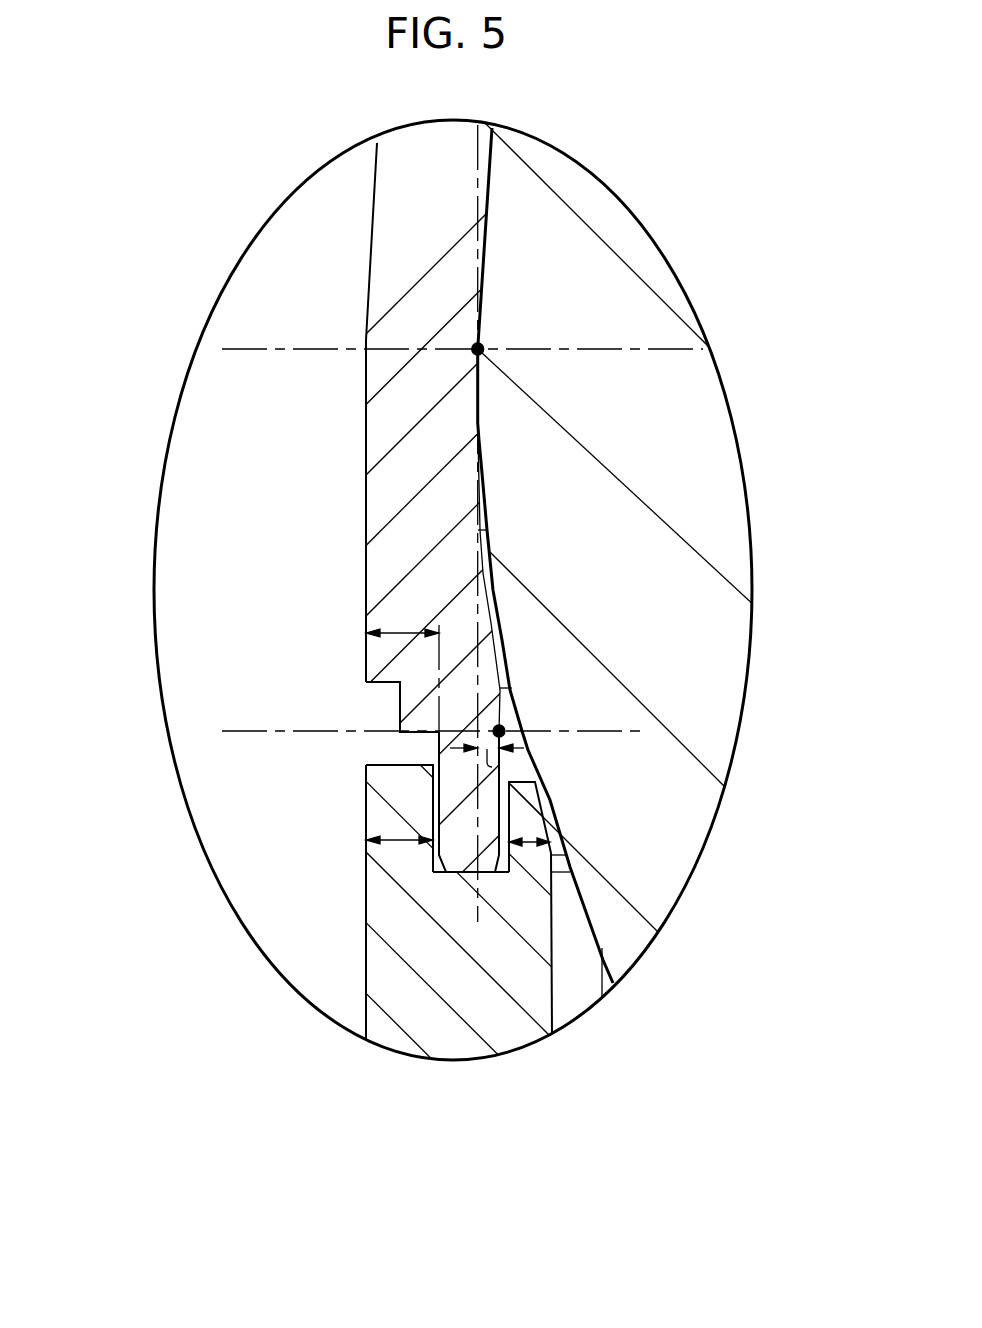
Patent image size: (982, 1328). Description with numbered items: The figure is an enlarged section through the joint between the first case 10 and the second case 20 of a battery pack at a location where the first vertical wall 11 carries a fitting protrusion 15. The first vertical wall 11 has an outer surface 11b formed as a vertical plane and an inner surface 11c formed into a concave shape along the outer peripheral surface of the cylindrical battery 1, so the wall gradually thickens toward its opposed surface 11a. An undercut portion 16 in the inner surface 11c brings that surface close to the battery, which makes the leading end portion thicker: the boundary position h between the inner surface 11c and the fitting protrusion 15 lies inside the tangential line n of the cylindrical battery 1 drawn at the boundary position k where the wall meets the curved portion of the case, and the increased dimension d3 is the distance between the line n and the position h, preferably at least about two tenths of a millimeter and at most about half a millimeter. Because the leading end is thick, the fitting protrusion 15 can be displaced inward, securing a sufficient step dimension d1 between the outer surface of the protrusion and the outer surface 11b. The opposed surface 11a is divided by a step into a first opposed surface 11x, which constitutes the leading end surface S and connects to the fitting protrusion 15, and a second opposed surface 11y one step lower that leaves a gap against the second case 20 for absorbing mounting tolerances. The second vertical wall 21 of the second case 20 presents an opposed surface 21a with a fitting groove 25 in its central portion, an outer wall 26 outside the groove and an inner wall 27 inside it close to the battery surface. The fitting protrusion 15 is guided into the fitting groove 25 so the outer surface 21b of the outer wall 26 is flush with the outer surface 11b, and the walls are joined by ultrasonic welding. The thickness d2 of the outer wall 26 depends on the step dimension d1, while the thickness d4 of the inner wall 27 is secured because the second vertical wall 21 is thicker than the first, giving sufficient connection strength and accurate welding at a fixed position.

The cylindrical battery 1 is at (653, 413).
The first case 10 is at (292, 423).
The first vertical wall 11 is at (398, 478).
The opposed surface 11a is at (237, 632).
The outer surface 11b is at (365, 573).
The inner surface 11c is at (490, 620).
The first opposed surface 11x is at (426, 748).
The second opposed surface 11y is at (380, 684).
The fitting protrusion 15 is at (458, 828).
The undercut portion 16 is at (490, 677).
The second case 20 is at (318, 949).
The second vertical wall 21 is at (430, 1010).
The opposed surface 21a is at (384, 764).
The outer surface 21b is at (365, 810).
The fitting groove 25 is at (442, 872).
The outer wall 26 is at (400, 790).
The inner wall 27 is at (528, 820).
The boundary position k is at (478, 347).
The boundary position h is at (504, 727).
The leading end surface S is at (250, 733).
The tangential line n is at (478, 920).
The step dimension d1 is at (402, 667).
The thickness d2 is at (399, 856).
The increased dimension d3 is at (490, 766).
The thickness d4 is at (528, 842).